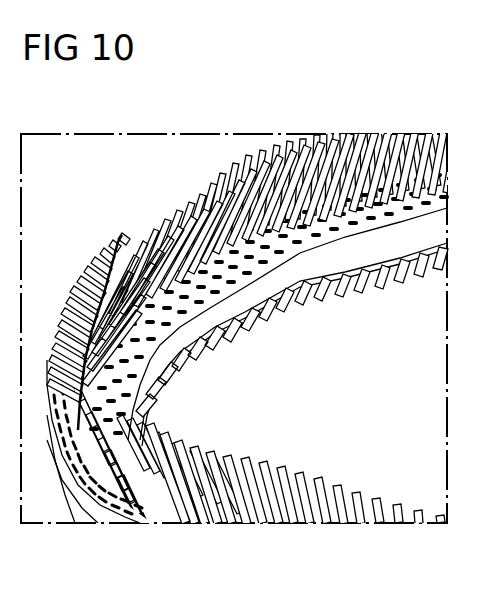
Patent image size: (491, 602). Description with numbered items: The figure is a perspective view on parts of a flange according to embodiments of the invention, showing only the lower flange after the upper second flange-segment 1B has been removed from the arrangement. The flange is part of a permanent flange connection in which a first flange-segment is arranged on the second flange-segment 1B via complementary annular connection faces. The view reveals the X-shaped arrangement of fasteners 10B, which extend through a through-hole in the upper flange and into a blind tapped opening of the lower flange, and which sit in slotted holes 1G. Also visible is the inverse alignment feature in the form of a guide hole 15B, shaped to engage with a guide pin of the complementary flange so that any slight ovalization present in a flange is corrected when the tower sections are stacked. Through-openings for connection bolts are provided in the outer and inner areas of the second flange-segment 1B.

The fastener 10B is at (127, 236).
The second flange-segment 1B is at (192, 338).
The slotted holes 1G is at (263, 327).
The guide hole 15B is at (302, 230).